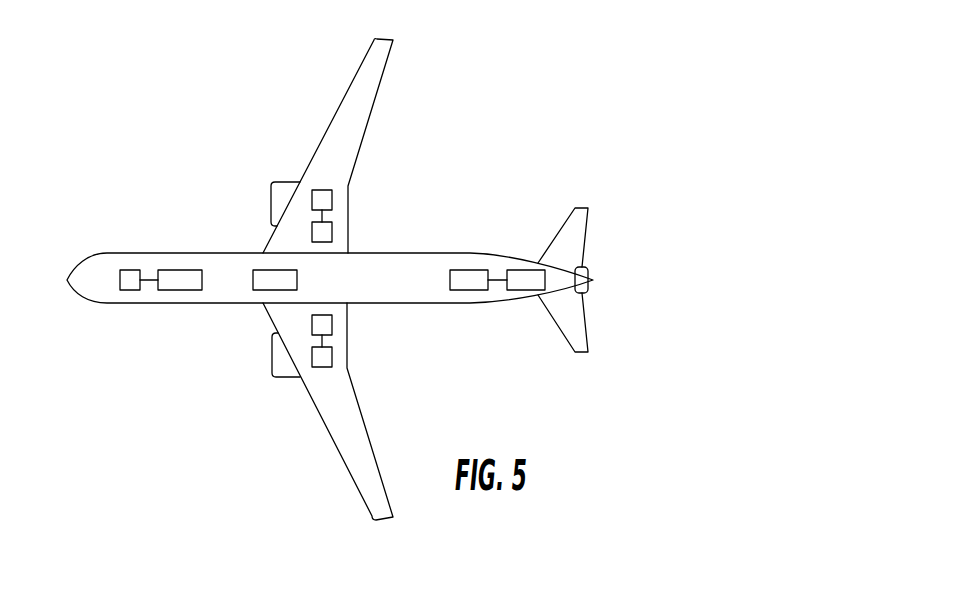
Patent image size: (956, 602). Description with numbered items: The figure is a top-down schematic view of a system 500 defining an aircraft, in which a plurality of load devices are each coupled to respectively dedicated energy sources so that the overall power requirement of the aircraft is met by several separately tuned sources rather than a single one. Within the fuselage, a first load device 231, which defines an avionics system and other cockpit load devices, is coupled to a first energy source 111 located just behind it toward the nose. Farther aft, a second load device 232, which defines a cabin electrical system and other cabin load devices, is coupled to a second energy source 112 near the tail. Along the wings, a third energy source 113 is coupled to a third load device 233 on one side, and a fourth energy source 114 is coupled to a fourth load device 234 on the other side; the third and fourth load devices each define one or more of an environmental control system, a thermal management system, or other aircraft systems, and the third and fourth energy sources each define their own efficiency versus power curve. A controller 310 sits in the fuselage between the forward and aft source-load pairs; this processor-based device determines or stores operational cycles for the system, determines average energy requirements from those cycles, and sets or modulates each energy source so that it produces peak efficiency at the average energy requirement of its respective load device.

The system defining an aircraft 500 is at (440, 156).
The first load device 231 is at (133, 270).
The first energy source 111 is at (177, 282).
The controller 310 is at (272, 282).
The second load device 232 is at (467, 282).
The second energy source 112 is at (537, 277).
The third energy source 113 is at (322, 190).
The third load device 233 is at (322, 232).
The fourth load device 234 is at (323, 325).
The fourth energy source 114 is at (322, 360).